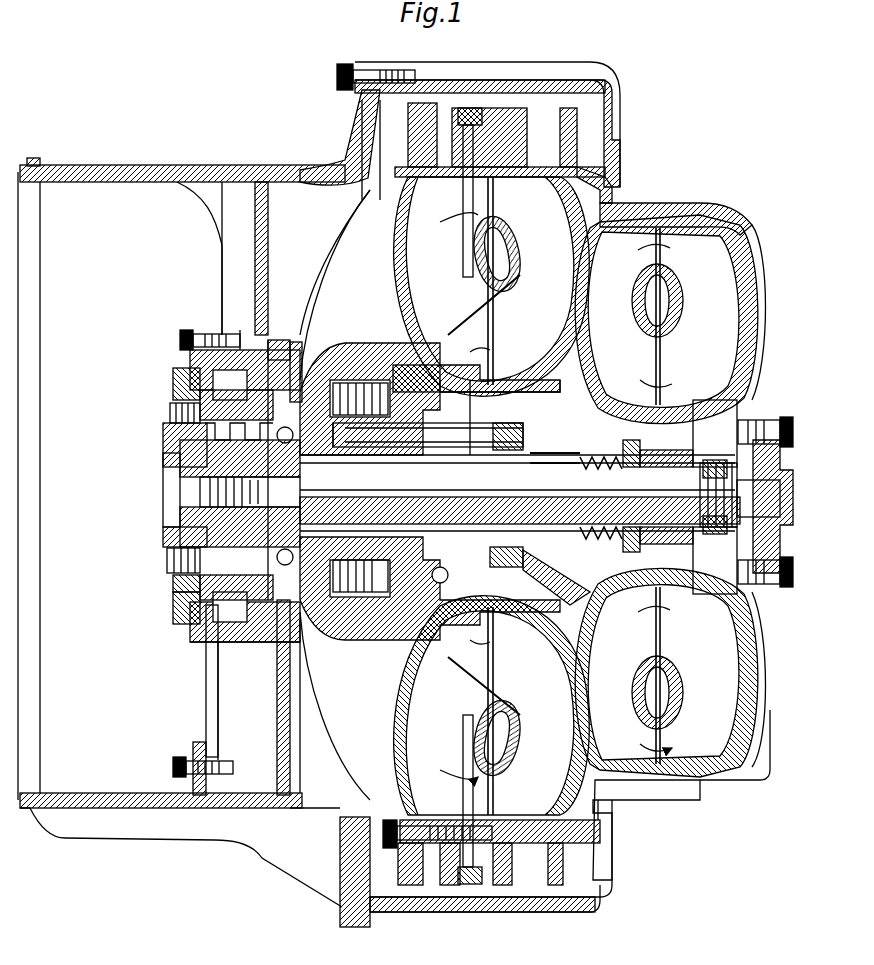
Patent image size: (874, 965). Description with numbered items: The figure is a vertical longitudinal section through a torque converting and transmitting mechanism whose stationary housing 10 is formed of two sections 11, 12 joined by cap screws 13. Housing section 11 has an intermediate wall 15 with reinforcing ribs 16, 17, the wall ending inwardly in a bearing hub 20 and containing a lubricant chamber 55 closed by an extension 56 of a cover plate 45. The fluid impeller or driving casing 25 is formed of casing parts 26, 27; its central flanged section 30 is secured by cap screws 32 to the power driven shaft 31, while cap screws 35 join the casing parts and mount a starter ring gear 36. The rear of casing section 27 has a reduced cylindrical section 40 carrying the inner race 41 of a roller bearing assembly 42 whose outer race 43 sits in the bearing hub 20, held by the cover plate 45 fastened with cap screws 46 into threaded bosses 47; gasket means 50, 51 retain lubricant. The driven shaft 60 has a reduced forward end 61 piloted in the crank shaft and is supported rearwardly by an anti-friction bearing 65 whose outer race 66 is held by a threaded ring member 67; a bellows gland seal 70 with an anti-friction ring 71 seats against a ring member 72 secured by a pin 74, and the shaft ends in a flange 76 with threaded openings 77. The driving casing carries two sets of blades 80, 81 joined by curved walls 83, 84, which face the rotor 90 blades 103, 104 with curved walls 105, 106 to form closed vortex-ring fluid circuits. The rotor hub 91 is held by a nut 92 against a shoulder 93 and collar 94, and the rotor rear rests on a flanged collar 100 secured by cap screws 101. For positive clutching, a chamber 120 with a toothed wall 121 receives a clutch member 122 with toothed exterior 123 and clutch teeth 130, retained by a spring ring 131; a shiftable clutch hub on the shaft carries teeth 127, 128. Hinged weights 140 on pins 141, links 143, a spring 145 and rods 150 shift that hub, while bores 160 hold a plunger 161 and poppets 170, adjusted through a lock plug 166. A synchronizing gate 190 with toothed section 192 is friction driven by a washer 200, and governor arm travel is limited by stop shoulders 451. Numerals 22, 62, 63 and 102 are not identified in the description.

The stationary housing 10 is at (536, 56).
The housing section 11 is at (232, 170).
The housing section 12 is at (622, 134).
The cap screws 13 is at (346, 66).
The intermediate web or wall 15 is at (255, 250).
The reinforcing rib 16 is at (212, 198).
The reinforcing rib 17 is at (312, 208).
The bearing hub 20 is at (290, 342).
The main shaft 22 is at (520, 493).
The rotatably mounted casing 25 is at (642, 198).
The casing part 26 is at (712, 230).
The driving casing section 27 is at (405, 262).
The central flanged section 30 is at (790, 440).
The power driven shaft 31 is at (780, 605).
The cap screws 32 is at (790, 612).
The cap screws 35 is at (390, 845).
The starter ring gear 36 is at (412, 885).
The reduced cylindrical section 40 is at (170, 416).
The inner race 41 is at (173, 585).
The roller bearing assembly 42 is at (190, 612).
The outer race 43 is at (190, 630).
The cover plate 45 is at (190, 358).
The cap screws 46 is at (180, 330).
The threaded bosses 47 is at (222, 330).
The gasket means 50 is at (298, 342).
The companion gasket means 51 is at (173, 380).
The lubricant chamber 55 is at (290, 764).
The extension 56 is at (180, 724).
The driven shaft 60 is at (565, 452).
The reduced forward end 61 is at (758, 495).
The bushing 62 is at (318, 513).
The ball 63 is at (280, 452).
The anti-friction bearing 65 is at (280, 538).
The outer race 66 is at (356, 345).
The threaded ring member 67 is at (314, 672).
The bellows gland seal 70 is at (200, 497).
The anti-friction ring 71 is at (180, 518).
The ring member 72 is at (163, 537).
The pin 74 is at (163, 434).
The flange 76 is at (170, 405).
The threaded openings 77 is at (167, 560).
The driving blades or vanes 80 is at (480, 312).
The driving blades or vanes 81 is at (662, 336).
The curved wall 83 is at (486, 304).
The curved wall 84 is at (680, 312).
The rotor 90 is at (596, 192).
The hub 91 is at (700, 445).
The nut 92 is at (715, 478).
The shoulder 93 is at (610, 487).
The collar 94 is at (616, 450).
The flanged collar 100 is at (474, 380).
The cap screws 101 is at (490, 352).
The gear 102 is at (492, 568).
The driven blades or vanes 103 is at (500, 330).
The driven blades or vanes 104 is at (664, 362).
The curved wall 105 is at (520, 262).
The curved wall 106 is at (638, 318).
The chamber 120 is at (364, 345).
The toothed circumferential wall 121 is at (372, 660).
The clutch member 122 is at (320, 630).
The toothed exterior 123 is at (360, 345).
The clutch teeth 127 is at (330, 669).
The clutch teeth 128 is at (360, 566).
The clutch teeth 130 is at (359, 399).
The spring ring 131 is at (403, 365).
The hinged weights 140 is at (612, 616).
The pins 141 is at (652, 618).
The links 143 is at (540, 620).
The spring 145 is at (556, 416).
The rods 150 is at (512, 412).
The bores 160 is at (428, 483).
The plunger 161 is at (354, 513).
The lock plug 166 is at (180, 458).
The poppets 170 is at (469, 483).
The synchronizing gate 190 is at (468, 660).
The toothed section 192 is at (470, 318).
The friction drive washer 200 is at (400, 632).
The stop shoulders 451 is at (530, 396).